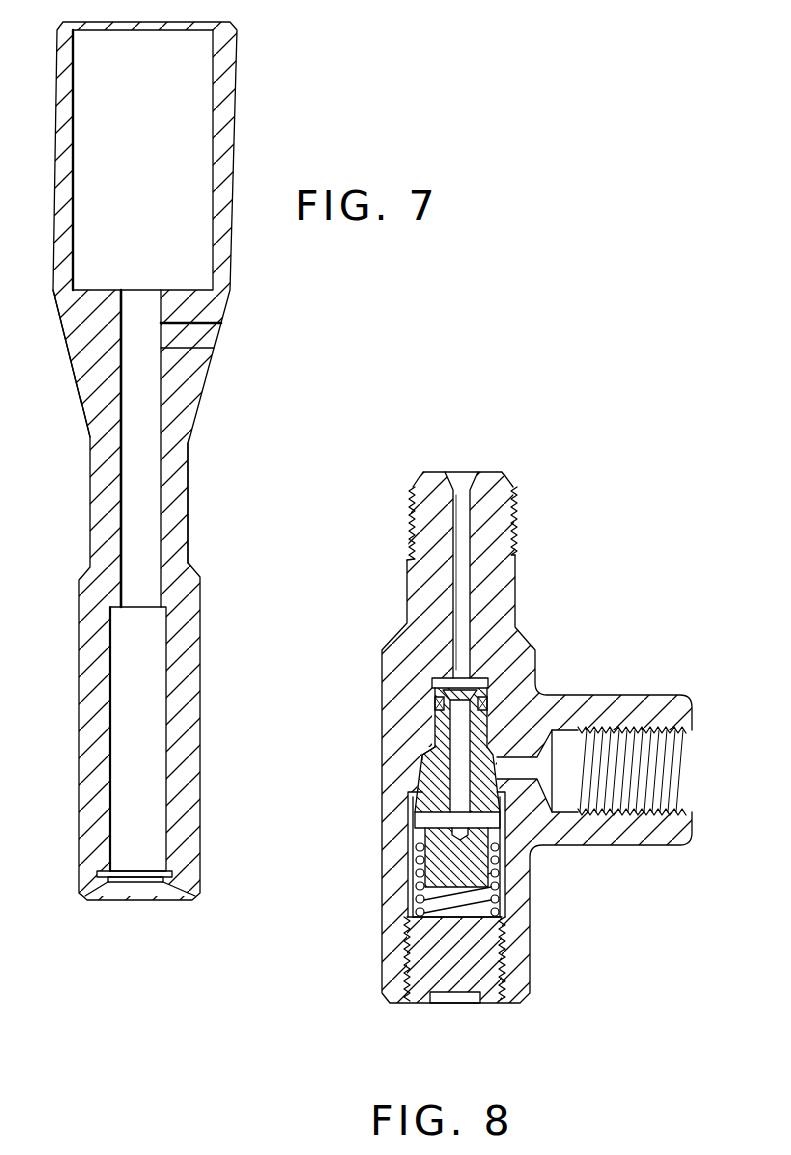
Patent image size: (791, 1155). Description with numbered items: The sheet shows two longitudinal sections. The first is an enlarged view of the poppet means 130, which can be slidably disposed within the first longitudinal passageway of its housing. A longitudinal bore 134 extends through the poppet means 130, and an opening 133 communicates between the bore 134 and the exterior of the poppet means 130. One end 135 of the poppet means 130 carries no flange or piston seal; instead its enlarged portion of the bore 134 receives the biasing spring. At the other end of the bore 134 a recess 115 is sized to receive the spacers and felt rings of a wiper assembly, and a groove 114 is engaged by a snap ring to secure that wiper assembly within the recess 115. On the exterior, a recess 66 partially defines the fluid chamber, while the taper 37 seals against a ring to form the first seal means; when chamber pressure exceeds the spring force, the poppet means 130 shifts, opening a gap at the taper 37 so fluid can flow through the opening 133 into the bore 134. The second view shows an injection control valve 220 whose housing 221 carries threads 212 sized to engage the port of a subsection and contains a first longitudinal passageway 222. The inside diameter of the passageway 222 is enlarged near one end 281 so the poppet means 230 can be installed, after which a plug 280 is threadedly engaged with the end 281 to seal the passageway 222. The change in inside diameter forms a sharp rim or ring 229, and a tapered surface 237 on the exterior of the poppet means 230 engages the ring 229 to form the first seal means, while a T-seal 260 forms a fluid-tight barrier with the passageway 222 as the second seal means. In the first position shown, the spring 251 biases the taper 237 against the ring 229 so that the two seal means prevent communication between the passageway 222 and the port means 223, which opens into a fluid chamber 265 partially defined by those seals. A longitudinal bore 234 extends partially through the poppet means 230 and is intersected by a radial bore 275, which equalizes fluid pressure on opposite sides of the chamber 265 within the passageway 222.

In FIG. 7, the poppet means 130 is at (243, 28).
In FIG. 7, the one end of poppet means 135 is at (228, 100).
In FIG. 7, the opening 133 is at (215, 348).
In FIG. 7, the longitudinal bore 134 is at (141, 401).
In FIG. 7, the taper 37 is at (72, 371).
In FIG. 7, the recess 66 is at (189, 489).
In FIG. 7, the recess 115 is at (113, 664).
In FIG. 7, the groove 114 is at (130, 874).
In FIG. 8, the valve 220 is at (385, 627).
In FIG. 8, the housing 221 is at (495, 597).
In FIG. 8, the threads 212 is at (512, 504).
In FIG. 8, the first longitudinal passageway 222 is at (463, 515).
In FIG. 8, the longitudinal bore 234 is at (450, 660).
In FIG. 8, the T-seal 260 is at (492, 706).
In FIG. 8, the fluid chamber 265 is at (425, 760).
In FIG. 8, the poppet means 230 is at (438, 775).
In FIG. 8, the sharp rim or ring 229 is at (433, 796).
In FIG. 8, the radial bore 275 is at (418, 819).
In FIG. 8, the spring 251 is at (505, 887).
In FIG. 8, the tapered surface 237 is at (500, 770).
In FIG. 8, the port means 223 is at (655, 813).
In FIG. 8, the plug 280 is at (460, 968).
In FIG. 8, the one end 281 is at (386, 967).